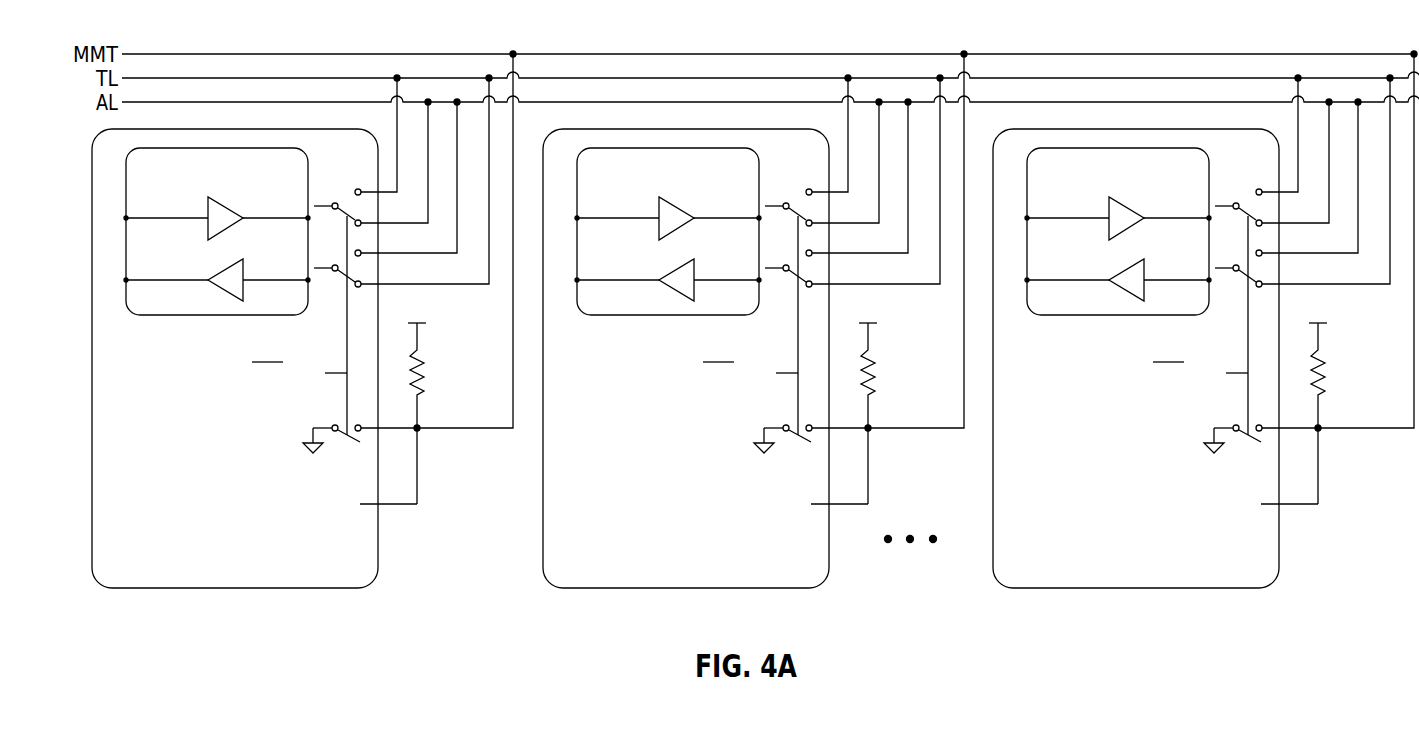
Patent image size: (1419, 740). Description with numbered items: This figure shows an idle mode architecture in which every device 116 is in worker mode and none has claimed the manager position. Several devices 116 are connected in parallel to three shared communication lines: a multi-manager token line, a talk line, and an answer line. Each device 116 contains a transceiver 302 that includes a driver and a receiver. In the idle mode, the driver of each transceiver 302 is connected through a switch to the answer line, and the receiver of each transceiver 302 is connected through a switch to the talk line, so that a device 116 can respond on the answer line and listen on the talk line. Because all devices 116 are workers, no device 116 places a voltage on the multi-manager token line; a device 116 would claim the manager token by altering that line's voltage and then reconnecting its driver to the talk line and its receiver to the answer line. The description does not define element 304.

The device 116 is at (188, 589).
The transceiver 302 is at (140, 316).
The pull-up resistor 304 is at (867, 400).